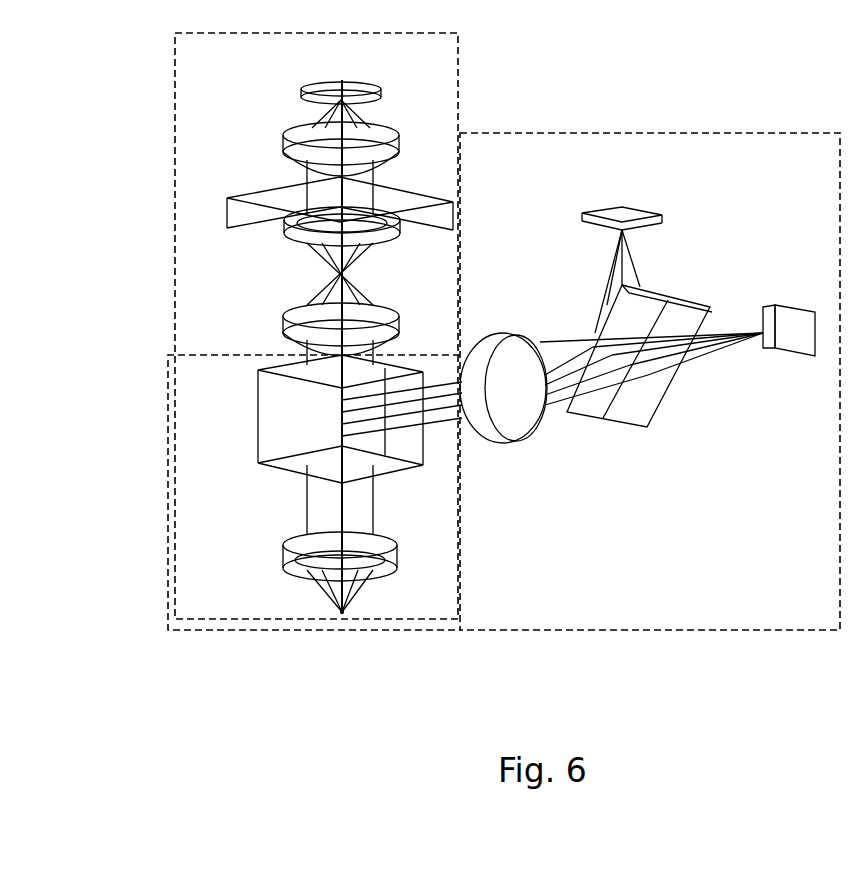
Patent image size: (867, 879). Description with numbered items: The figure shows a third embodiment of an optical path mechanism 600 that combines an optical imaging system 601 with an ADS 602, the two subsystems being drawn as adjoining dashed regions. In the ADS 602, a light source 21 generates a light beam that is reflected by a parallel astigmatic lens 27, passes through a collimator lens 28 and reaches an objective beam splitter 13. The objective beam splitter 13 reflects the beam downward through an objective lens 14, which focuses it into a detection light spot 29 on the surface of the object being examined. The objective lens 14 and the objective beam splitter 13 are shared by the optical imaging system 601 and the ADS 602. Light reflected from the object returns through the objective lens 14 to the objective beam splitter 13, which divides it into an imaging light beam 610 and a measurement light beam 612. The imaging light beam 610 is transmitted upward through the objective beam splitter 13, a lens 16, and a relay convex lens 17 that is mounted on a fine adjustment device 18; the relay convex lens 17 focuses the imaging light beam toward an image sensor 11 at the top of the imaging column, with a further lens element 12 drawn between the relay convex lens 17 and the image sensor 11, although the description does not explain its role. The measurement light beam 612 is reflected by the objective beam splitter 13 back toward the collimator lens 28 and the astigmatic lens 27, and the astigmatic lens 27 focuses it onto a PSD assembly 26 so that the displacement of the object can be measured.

The optical path mechanism 600 is at (136, 75).
The optical imaging system 601 is at (230, 344).
The ADS 602 is at (833, 529).
The imaging light beam 610 is at (308, 355).
The measurement light beam 612 is at (438, 360).
The image sensor 11 is at (381, 90).
The collimating lens 12 is at (396, 130).
The fine adjustment device 18 is at (425, 205).
The relay convex lens 17 is at (290, 236).
The lens 16 is at (398, 305).
The objective beam splitter 13 is at (418, 450).
The objective lens 14 is at (398, 565).
The collimator lens 28 is at (493, 433).
The parallel astigmatic lens 27 is at (640, 408).
The light source 21 is at (660, 212).
The PSD assembly 26 is at (780, 305).
The detection light spot 29 is at (342, 612).